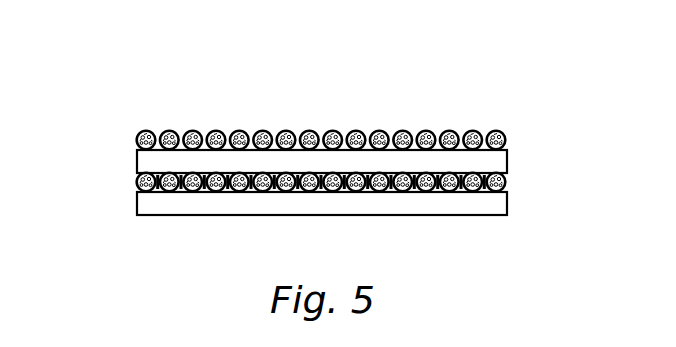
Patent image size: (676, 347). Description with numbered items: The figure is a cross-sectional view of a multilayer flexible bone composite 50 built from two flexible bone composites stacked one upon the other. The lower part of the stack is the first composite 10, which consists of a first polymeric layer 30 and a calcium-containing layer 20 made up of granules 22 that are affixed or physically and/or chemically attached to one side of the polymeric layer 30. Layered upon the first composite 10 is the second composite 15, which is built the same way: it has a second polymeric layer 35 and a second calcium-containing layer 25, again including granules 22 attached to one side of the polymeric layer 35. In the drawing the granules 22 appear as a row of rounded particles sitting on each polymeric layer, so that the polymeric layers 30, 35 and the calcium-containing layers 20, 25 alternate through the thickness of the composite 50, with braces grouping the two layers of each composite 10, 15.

The multilayer flexible bone composite 50 is at (227, 97).
The granules 22 is at (375, 130).
The second calcium-containing layer 25 is at (137, 143).
The second polymeric layer 35 is at (137, 160).
The second calcium-containing layer 20 is at (137, 183).
The first polymeric layer 30 is at (148, 216).
The second composite 15 is at (533, 120).
The first composite 10 is at (533, 177).